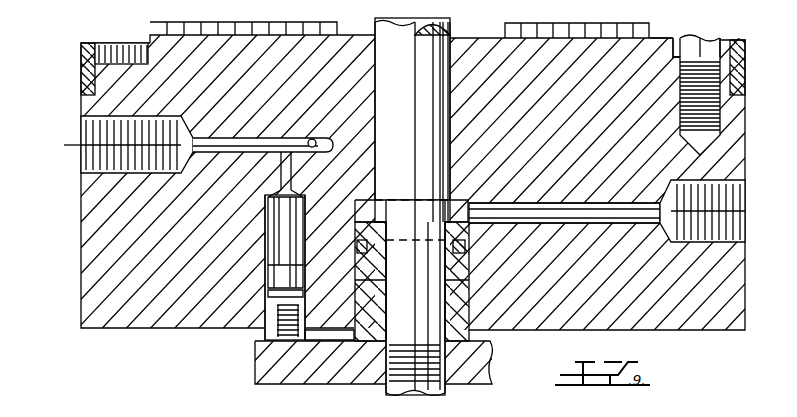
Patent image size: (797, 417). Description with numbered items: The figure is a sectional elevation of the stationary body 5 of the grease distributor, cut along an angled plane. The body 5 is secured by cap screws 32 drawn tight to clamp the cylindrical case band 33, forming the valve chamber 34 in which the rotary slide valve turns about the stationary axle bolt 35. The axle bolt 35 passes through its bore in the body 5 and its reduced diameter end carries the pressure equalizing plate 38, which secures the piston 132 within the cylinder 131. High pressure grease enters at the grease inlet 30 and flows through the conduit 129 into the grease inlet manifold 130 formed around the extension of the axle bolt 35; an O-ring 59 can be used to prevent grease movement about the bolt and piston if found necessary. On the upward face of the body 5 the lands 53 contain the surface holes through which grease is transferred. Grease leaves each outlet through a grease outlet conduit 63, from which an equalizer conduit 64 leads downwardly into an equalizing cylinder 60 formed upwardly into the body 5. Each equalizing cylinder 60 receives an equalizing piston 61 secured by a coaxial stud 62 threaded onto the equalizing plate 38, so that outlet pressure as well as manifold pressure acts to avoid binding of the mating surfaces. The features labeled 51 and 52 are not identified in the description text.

The body 5 is at (81, 223).
The grease inlet 30 is at (745, 215).
The cap screws 32 is at (708, 38).
The cylindrical case band 33 is at (81, 63).
The valve chamber 34 is at (118, 50).
The axle bolt 35 is at (410, 134).
The pressure equalizing plate 38 is at (255, 361).
The top surface 51 is at (660, 38).
The rod 52 is at (462, 36).
The lands 53 is at (262, 22).
The O-ring 59 is at (357, 247).
The equalizing cylinders 60 is at (265, 227).
The equalizing pistons 61 is at (268, 272).
The coaxial studs 62 is at (268, 340).
The grease outlet conduit 63 is at (256, 138).
The equalizer conduit 64 is at (281, 170).
The conduit 129 is at (580, 203).
The grease inlet manifold 130 is at (466, 202).
The cylinder 131 is at (355, 272).
The piston 132 is at (355, 298).